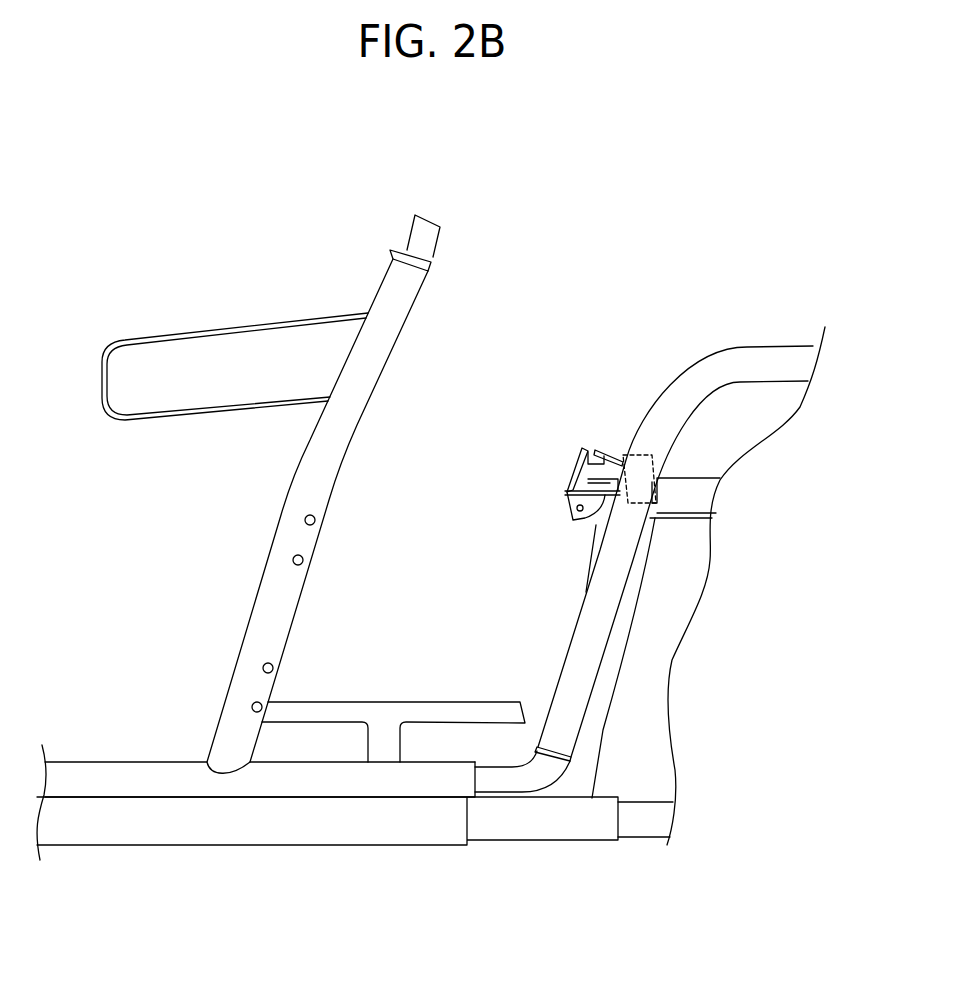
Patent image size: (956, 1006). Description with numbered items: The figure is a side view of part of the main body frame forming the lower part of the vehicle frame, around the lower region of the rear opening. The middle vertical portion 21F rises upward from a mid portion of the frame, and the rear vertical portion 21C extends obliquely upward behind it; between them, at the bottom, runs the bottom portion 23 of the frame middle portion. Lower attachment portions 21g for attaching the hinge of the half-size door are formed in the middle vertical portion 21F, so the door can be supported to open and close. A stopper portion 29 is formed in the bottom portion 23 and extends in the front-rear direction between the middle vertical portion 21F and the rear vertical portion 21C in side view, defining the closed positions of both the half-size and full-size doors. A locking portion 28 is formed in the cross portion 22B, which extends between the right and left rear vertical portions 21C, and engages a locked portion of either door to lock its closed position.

The middle vertical portion 21F is at (343, 427).
The lower attachment portion 21g is at (305, 519).
The rear vertical portion 21C is at (587, 603).
The cross portion 22B is at (640, 452).
The bottom portion 23 is at (217, 830).
The locking portion 28 is at (573, 468).
The stopper portion 29 is at (390, 717).